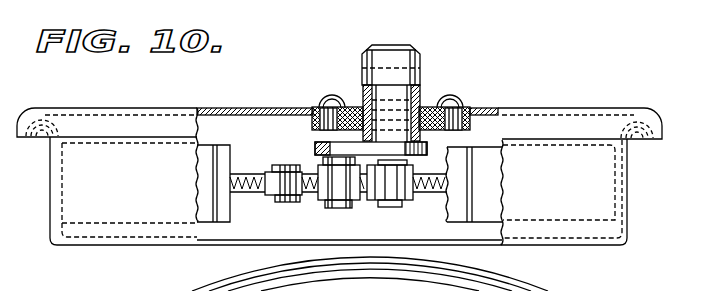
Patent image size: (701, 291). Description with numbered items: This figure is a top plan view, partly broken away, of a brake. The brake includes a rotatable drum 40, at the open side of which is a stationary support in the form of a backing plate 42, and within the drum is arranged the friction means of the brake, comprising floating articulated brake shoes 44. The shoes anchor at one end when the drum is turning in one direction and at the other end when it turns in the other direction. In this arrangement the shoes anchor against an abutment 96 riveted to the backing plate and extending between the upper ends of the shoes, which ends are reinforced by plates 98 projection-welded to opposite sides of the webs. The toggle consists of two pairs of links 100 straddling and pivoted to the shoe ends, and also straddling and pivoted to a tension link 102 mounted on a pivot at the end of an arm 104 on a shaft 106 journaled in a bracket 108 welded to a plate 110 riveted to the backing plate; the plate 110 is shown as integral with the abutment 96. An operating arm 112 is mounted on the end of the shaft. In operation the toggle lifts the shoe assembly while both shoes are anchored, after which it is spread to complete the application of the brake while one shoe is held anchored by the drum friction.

The rotatable drum 40 is at (133, 210).
The backing plate 42 is at (128, 130).
The floating articulated brake shoes 44 is at (202, 160).
The abutment 96 is at (290, 290).
The plates 98 is at (246, 195).
The links 100 is at (300, 202).
The tension link 102 is at (323, 190).
The arm 104 is at (347, 106).
The shaft 106 is at (425, 118).
The bracket 108 is at (445, 100).
The plate 110 is at (320, 106).
The operating arm 112 is at (403, 63).